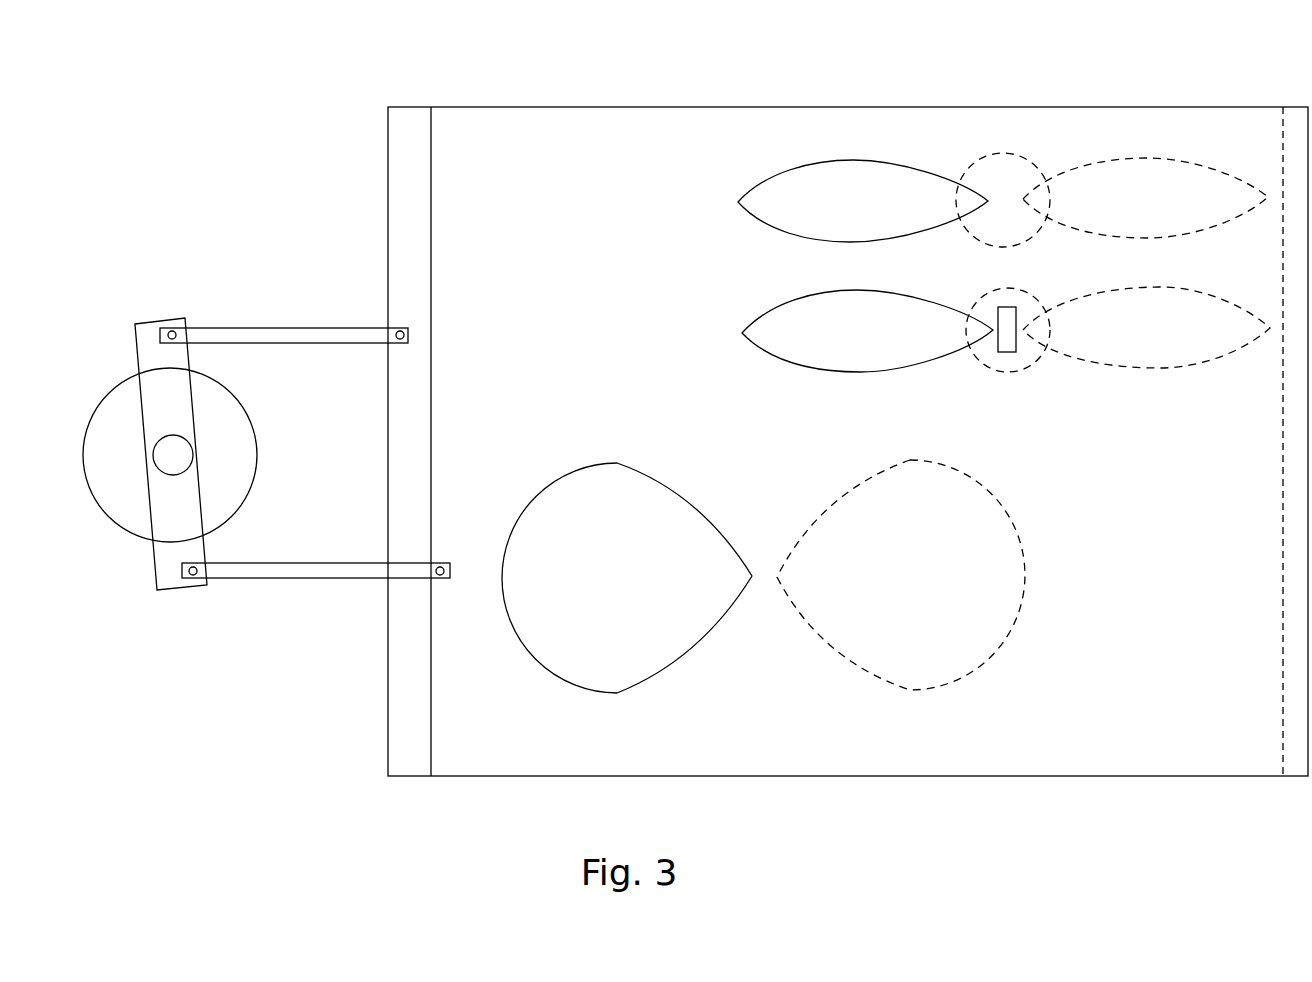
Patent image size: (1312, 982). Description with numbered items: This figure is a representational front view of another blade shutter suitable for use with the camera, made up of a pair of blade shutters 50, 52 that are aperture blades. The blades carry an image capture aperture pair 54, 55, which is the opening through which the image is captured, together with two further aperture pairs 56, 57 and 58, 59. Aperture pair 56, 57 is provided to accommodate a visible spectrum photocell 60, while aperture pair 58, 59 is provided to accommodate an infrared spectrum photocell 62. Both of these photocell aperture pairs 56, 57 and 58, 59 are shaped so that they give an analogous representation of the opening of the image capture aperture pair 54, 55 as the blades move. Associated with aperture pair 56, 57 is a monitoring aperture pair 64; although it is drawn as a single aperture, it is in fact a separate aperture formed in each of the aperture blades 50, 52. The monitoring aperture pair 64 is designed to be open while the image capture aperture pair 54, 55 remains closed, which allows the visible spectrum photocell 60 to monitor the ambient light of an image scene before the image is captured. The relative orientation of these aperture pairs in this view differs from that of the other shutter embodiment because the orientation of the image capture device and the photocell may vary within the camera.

The blade shutter 50 is at (505, 755).
The blade shutter 52 is at (406, 690).
The image capture aperture 54 is at (605, 678).
The image capture aperture 55 is at (907, 675).
The aperture for visible spectrum photocell 56 is at (830, 360).
The aperture for visible spectrum photocell 57 is at (1145, 362).
The aperture for infrared spectrum photocell 58 is at (805, 184).
The aperture for infrared spectrum photocell 59 is at (1157, 170).
The visible spectrum photocell 60 is at (1022, 364).
The infrared spectrum photocell 62 is at (977, 168).
The monitoring aperture pair 64 is at (1007, 335).